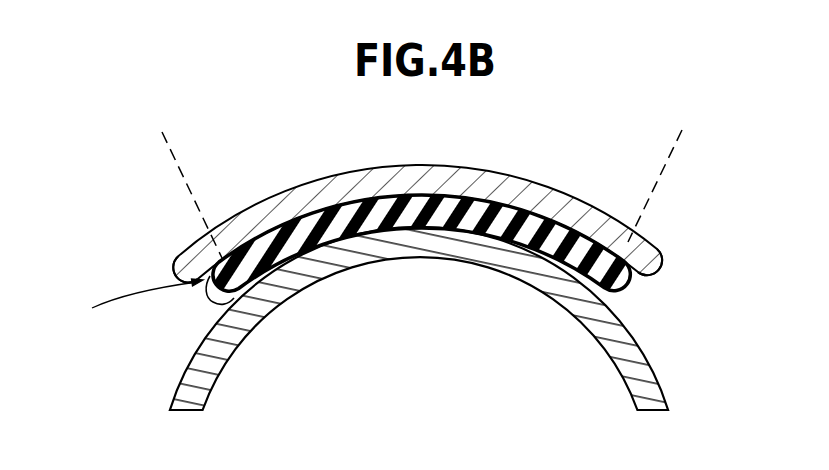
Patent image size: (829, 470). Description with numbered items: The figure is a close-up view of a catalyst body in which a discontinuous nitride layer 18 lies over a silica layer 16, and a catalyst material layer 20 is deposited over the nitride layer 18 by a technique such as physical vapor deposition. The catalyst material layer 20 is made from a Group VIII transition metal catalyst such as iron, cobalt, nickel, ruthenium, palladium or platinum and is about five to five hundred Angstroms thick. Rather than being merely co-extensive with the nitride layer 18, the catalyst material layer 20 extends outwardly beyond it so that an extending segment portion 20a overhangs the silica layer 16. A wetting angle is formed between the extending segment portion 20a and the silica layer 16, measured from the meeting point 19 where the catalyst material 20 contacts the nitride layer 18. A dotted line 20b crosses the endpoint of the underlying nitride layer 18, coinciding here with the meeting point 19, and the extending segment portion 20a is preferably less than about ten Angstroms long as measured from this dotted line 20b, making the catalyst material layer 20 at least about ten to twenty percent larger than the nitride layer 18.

The silica layer 16 is at (630, 348).
The nitride layer 18 is at (618, 286).
The meeting point 19 is at (131, 302).
The catalyst material layer 20 is at (517, 190).
The extending segment portion 20a is at (180, 272).
The dotted line 20b is at (188, 191).